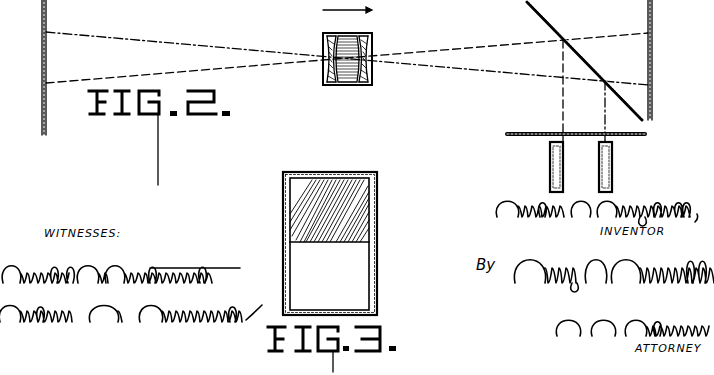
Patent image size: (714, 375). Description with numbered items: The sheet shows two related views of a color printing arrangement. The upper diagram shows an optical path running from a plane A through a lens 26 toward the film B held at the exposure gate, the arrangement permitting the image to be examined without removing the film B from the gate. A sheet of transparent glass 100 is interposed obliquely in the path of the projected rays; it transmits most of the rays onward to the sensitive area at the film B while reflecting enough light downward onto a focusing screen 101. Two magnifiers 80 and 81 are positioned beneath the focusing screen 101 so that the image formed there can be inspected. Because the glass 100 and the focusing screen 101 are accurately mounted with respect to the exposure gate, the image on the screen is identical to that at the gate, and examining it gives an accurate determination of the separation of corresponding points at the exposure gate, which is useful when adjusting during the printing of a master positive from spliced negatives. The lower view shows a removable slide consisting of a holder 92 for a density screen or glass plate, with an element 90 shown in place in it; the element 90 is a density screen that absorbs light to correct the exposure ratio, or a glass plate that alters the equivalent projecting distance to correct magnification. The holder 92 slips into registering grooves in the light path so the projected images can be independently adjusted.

In FIG. 2, the objective lens 26 is at (345, 86).
In FIG. 2, the sheet of transparent glass 100 is at (545, 18).
In FIG. 2, the focusing screen 101 is at (534, 132).
In FIG. 2, the magnifier 80 is at (553, 167).
In FIG. 2, the magnifier 81 is at (609, 167).
In FIG. 3, the element 90 is at (306, 213).
In FIG. 3, the holder 92 is at (290, 252).
In FIG. 2, the object plane A is at (42, 13).
In FIG. 2, the film B is at (652, 40).